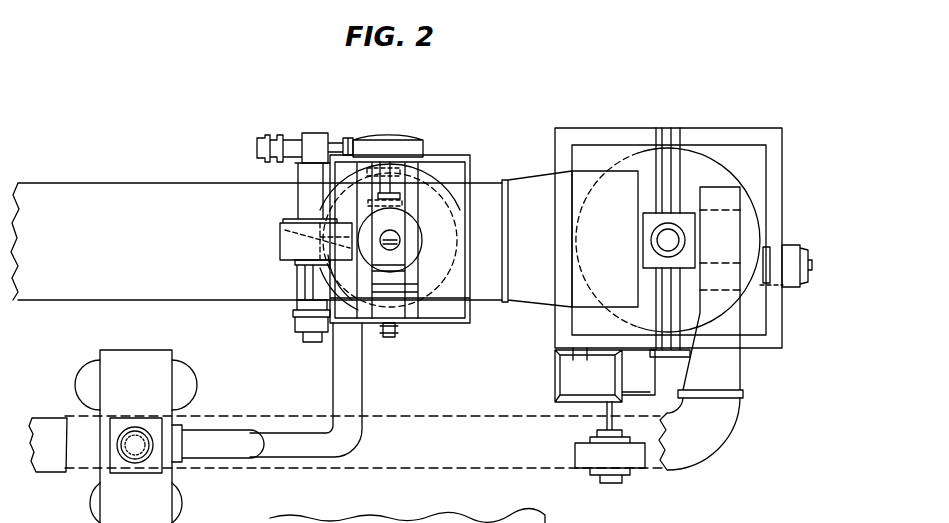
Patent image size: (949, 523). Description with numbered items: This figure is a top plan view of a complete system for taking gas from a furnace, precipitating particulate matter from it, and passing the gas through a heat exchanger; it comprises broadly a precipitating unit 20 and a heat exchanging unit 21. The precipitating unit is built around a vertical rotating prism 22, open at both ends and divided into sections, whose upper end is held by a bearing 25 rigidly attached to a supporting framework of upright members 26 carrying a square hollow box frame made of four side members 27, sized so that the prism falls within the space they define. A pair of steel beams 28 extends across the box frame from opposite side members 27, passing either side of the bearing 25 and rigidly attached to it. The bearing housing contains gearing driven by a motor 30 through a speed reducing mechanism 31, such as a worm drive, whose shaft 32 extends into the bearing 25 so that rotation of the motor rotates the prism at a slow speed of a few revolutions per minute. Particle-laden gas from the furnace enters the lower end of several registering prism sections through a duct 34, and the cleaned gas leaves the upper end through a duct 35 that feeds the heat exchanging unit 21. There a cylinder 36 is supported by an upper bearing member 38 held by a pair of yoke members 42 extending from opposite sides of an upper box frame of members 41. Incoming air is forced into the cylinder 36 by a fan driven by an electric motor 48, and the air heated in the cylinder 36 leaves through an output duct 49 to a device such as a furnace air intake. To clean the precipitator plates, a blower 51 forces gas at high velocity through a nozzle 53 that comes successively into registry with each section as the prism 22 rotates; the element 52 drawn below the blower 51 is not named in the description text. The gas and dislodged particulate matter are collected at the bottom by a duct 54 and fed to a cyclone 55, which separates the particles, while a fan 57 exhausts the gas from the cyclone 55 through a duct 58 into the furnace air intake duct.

The precipitating unit 20 is at (395, 371).
The heat exchanging unit 21 is at (688, 288).
The rotating prism 22 is at (383, 303).
The bearing 25 is at (407, 231).
The upright members 26 is at (397, 332).
The side members 27 is at (468, 166).
The steel beams 28 is at (410, 291).
The motor 30 is at (273, 132).
The speed reducing mechanism 31 is at (388, 142).
The shaft 32 is at (385, 167).
The duct 34 is at (192, 287).
The duct 35 is at (532, 288).
The cylinder 36 is at (738, 180).
The upper bearing member 38 is at (683, 223).
The box frame members 41 is at (753, 342).
The yoke members 42 is at (668, 168).
The electric motor 48 is at (788, 280).
The output duct 49 is at (722, 423).
The blower 51 is at (290, 243).
The connector 52 is at (300, 320).
The nozzle 53 is at (340, 240).
The duct 54 is at (343, 322).
The cyclone 55 is at (162, 373).
The fan 57 is at (115, 465).
The duct 58 is at (128, 430).